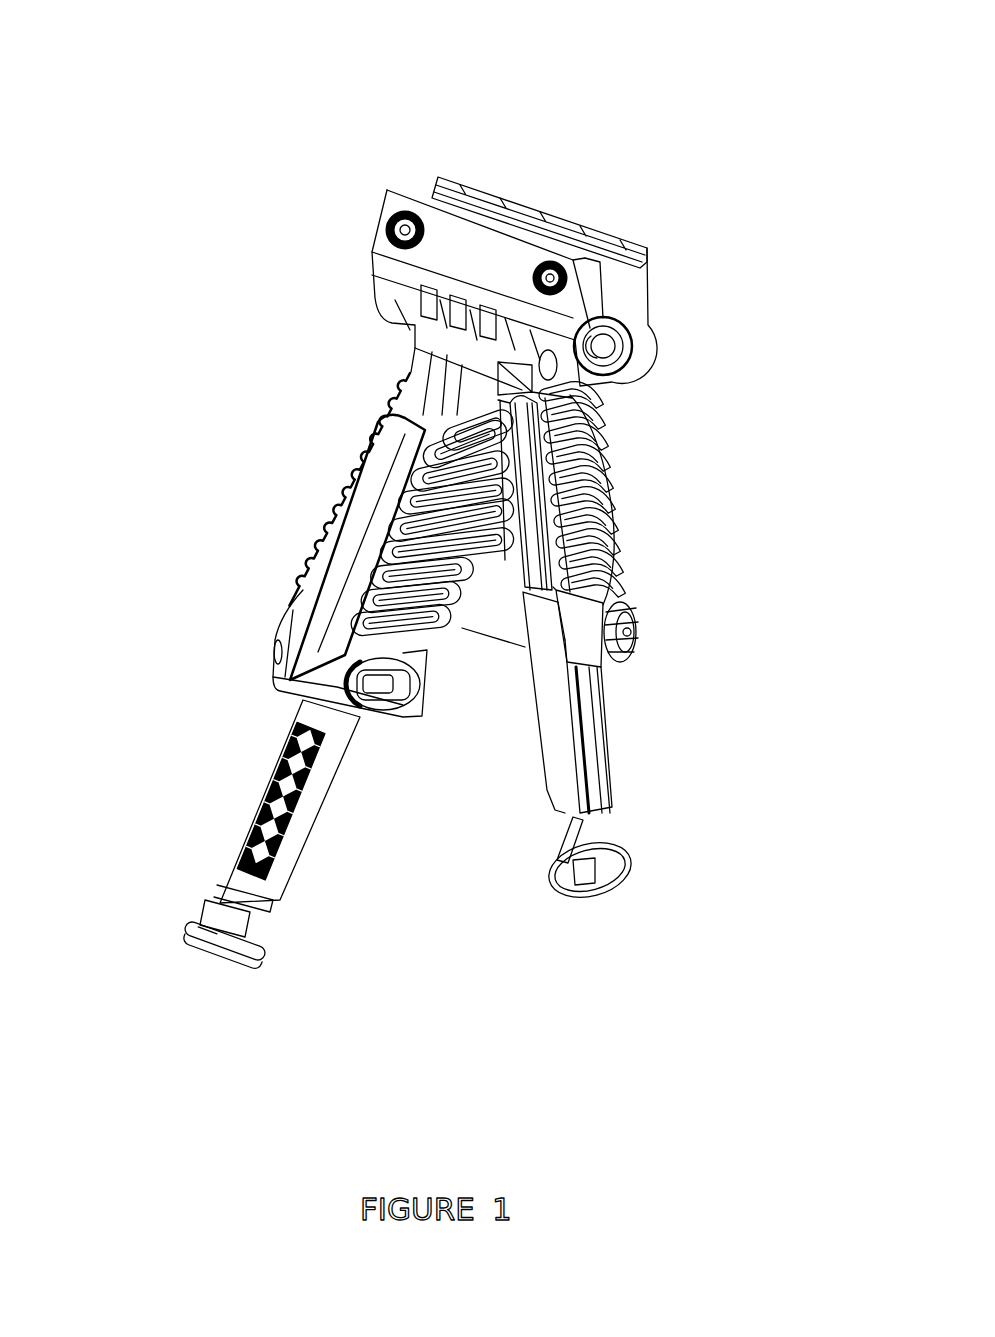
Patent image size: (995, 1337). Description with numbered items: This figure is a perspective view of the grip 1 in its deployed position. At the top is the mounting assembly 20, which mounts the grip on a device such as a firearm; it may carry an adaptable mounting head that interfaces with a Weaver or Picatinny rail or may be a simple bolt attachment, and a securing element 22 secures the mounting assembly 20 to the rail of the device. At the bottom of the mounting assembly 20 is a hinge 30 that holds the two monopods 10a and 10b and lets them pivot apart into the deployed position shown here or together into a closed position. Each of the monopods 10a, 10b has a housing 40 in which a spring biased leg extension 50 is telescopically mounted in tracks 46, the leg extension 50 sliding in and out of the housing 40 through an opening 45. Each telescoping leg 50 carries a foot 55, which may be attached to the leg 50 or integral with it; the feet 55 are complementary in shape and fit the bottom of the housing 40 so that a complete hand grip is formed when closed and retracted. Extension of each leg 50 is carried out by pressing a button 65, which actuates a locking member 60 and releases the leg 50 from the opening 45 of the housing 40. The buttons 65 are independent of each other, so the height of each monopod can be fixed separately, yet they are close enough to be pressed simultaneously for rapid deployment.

The grip 1 is at (587, 97).
The mounting assembly 20 is at (383, 190).
The securing element 22 is at (388, 233).
The hinge 30 is at (605, 342).
The monopod 10a is at (607, 464).
The monopod 10b is at (337, 502).
The tracks 46 is at (537, 537).
The housing 40 is at (273, 632).
The opening 45 is at (521, 703).
The leg extension 50 is at (262, 788).
The foot 55 is at (625, 882).
The locking member 60 is at (636, 637).
The button 65 is at (630, 653).